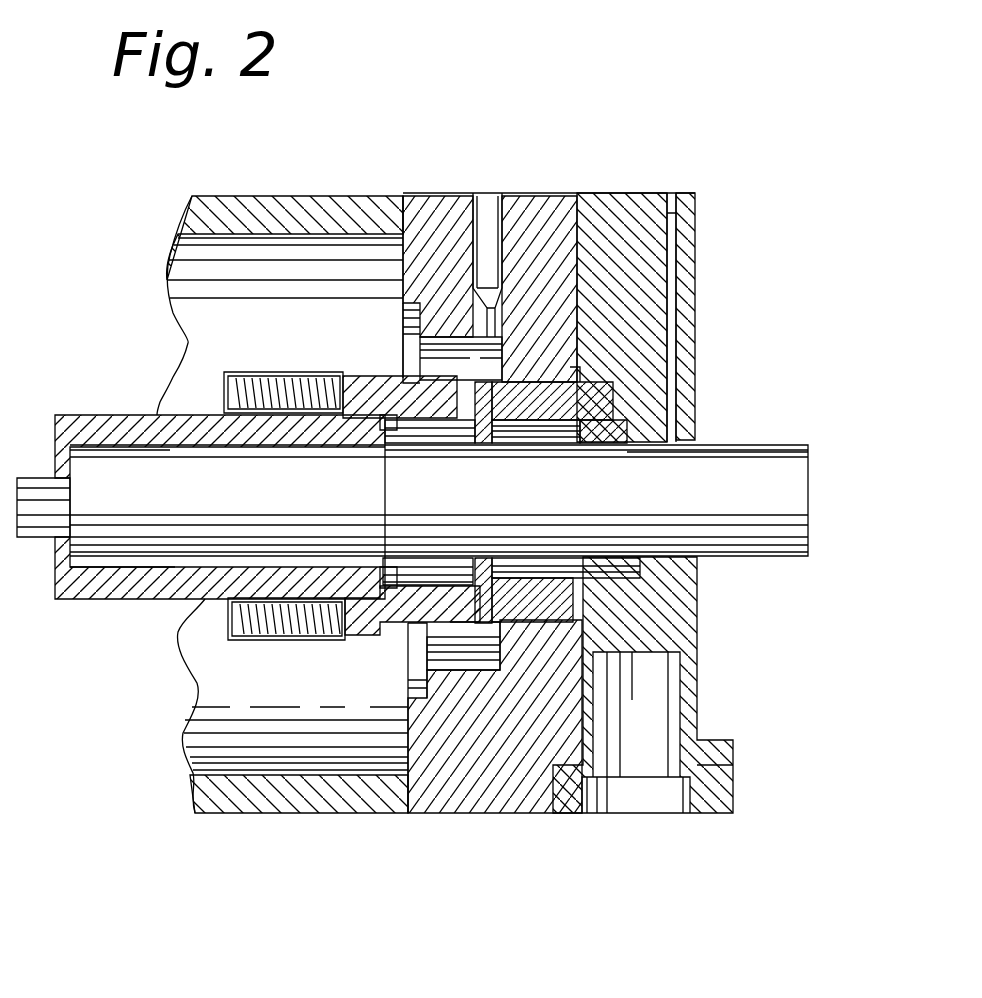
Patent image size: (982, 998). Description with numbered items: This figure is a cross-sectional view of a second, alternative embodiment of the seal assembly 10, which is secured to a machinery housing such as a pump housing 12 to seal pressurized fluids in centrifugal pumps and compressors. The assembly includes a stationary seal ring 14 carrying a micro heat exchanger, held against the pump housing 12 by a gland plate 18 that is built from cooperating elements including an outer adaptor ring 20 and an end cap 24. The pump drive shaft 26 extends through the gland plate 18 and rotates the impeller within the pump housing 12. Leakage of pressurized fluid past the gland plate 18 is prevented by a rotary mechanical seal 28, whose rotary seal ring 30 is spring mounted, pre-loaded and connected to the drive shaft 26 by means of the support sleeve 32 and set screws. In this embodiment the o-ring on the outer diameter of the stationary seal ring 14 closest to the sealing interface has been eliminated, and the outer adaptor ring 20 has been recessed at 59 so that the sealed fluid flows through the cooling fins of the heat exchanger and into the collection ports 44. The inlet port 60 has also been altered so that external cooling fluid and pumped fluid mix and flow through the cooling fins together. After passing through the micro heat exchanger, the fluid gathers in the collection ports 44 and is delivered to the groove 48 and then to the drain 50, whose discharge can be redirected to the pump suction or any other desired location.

The seal assembly 10 is at (710, 208).
The pump housing 12 is at (240, 210).
The stationary seal ring 14 is at (537, 382).
The gland plate 18 is at (618, 186).
The outer adaptor ring 20 is at (430, 215).
The end cap 24 is at (638, 213).
The drive shaft 26 is at (737, 462).
The rotary mechanical seal 28 is at (148, 636).
The rotary seal ring 30 is at (393, 390).
The support sleeve 32 is at (130, 415).
The collection ports 44 is at (520, 447).
The groove 48 is at (618, 438).
The drain 50 is at (652, 765).
The recess 59 is at (503, 340).
The inlet port 60 is at (480, 195).